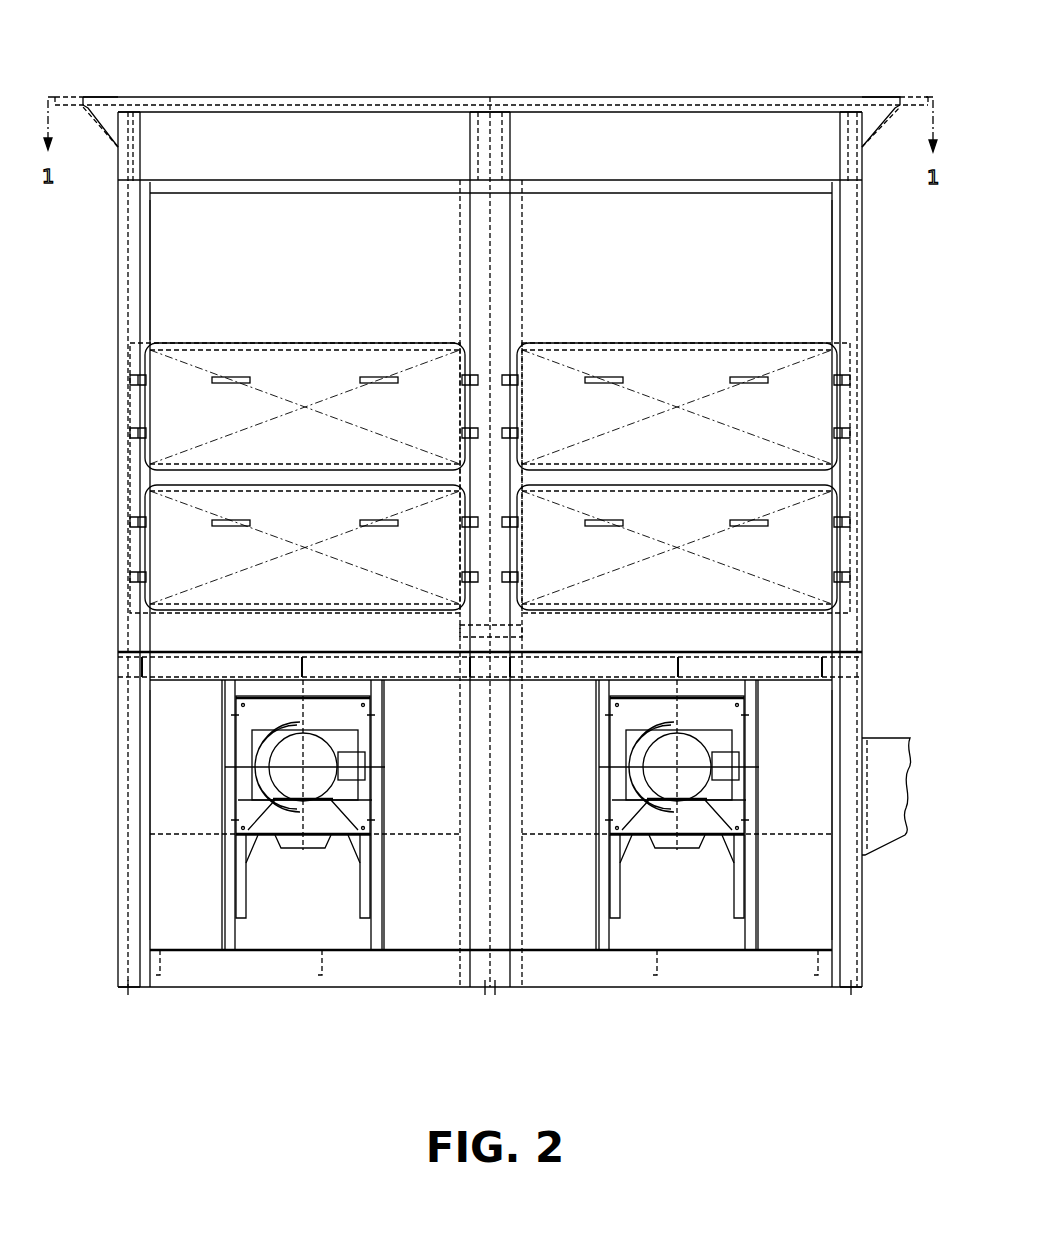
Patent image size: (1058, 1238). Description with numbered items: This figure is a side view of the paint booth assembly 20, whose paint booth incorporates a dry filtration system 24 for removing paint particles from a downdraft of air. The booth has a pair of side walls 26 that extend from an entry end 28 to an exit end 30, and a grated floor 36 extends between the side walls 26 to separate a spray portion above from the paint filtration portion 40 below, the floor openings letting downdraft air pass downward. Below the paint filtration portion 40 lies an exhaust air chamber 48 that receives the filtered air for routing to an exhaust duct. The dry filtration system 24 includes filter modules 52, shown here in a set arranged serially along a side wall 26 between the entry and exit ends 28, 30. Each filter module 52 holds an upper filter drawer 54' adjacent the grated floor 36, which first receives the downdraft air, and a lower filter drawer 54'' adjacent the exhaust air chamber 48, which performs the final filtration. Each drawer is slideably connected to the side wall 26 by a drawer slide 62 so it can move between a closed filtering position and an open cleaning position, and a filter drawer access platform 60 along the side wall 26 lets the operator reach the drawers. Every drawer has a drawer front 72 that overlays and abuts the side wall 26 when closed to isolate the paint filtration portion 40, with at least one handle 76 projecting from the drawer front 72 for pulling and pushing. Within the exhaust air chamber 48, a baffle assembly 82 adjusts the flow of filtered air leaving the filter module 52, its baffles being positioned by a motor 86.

The paint booth assembly 20 is at (92, 1006).
The dry filtration system 24 is at (850, 343).
The side walls 26 is at (177, 266).
The entry end 28 is at (83, 107).
The exit end 30 is at (916, 97).
The grated floor 36 is at (595, 92).
The paint filtration portion 40 is at (797, 290).
The exhaust air chamber 48 is at (175, 770).
The filter module 52 is at (216, 482).
The upper filter drawer 54' is at (499, 401).
The lower filter drawer 54'' is at (502, 580).
The filter drawer access platform 60 is at (185, 658).
The drawer slide 62 is at (140, 431).
The drawer front 72 is at (320, 375).
The handle 76 is at (232, 376).
The baffle assembly 82 is at (757, 886).
The motor 86 is at (682, 778).